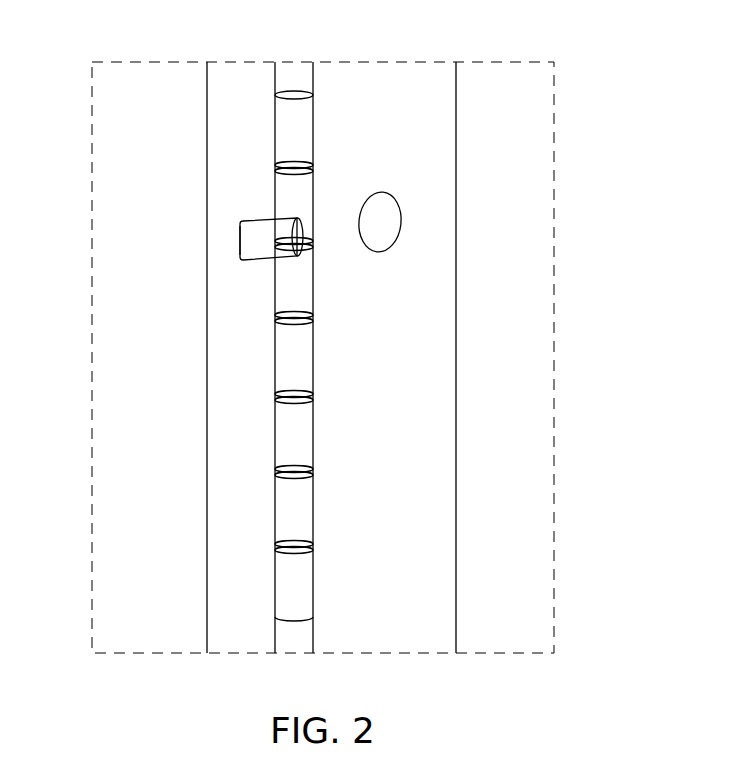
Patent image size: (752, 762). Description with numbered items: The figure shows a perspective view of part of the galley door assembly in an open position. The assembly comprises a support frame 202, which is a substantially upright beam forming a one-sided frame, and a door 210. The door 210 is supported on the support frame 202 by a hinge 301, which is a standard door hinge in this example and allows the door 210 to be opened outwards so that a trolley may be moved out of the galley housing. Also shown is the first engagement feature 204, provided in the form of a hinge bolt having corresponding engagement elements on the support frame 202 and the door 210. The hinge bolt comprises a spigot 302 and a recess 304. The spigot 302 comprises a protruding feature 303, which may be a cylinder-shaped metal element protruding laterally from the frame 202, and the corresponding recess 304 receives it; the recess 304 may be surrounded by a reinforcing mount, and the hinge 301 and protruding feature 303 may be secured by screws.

The support frame 202 is at (213, 160).
The door 210 is at (442, 128).
The first engagement feature 204 is at (299, 220).
The hinge 301 is at (295, 510).
The spigot 302 is at (238, 241).
The protruding feature 303 is at (257, 241).
The recess 304 is at (393, 222).